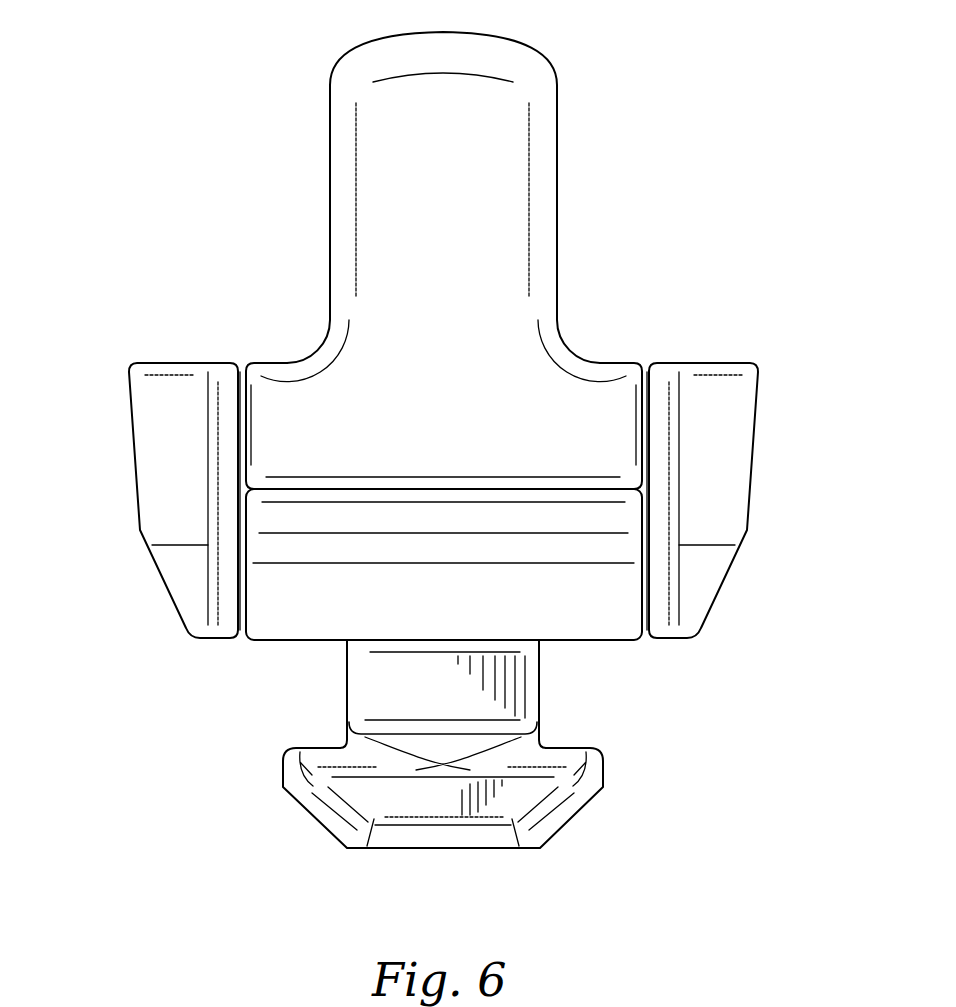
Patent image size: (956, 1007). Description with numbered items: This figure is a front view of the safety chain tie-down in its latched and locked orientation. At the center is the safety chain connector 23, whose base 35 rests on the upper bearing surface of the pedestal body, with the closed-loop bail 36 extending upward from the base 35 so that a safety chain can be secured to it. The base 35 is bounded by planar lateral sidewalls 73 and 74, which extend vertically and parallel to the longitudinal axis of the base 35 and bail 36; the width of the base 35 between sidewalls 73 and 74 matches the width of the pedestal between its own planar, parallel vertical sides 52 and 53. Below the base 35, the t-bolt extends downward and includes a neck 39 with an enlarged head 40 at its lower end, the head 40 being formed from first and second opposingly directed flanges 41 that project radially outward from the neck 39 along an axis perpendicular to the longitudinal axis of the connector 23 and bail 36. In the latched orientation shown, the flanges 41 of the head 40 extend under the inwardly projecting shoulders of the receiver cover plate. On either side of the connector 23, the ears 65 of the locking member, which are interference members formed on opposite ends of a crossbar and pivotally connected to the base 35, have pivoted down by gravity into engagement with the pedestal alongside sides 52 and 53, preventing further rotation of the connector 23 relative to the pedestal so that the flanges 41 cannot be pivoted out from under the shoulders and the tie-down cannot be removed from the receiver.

The safety chain connector 23 is at (306, 328).
The base 35 is at (582, 410).
The bail 36 is at (332, 66).
The neck 39 is at (541, 682).
The enlarged head 40 is at (456, 856).
The flanges 41 is at (282, 787).
The vertical side 52 is at (243, 607).
The vertical side 53 is at (644, 593).
The ears 65 is at (130, 366).
The lateral sidewall 73 is at (236, 420).
The lateral sidewall 74 is at (646, 415).